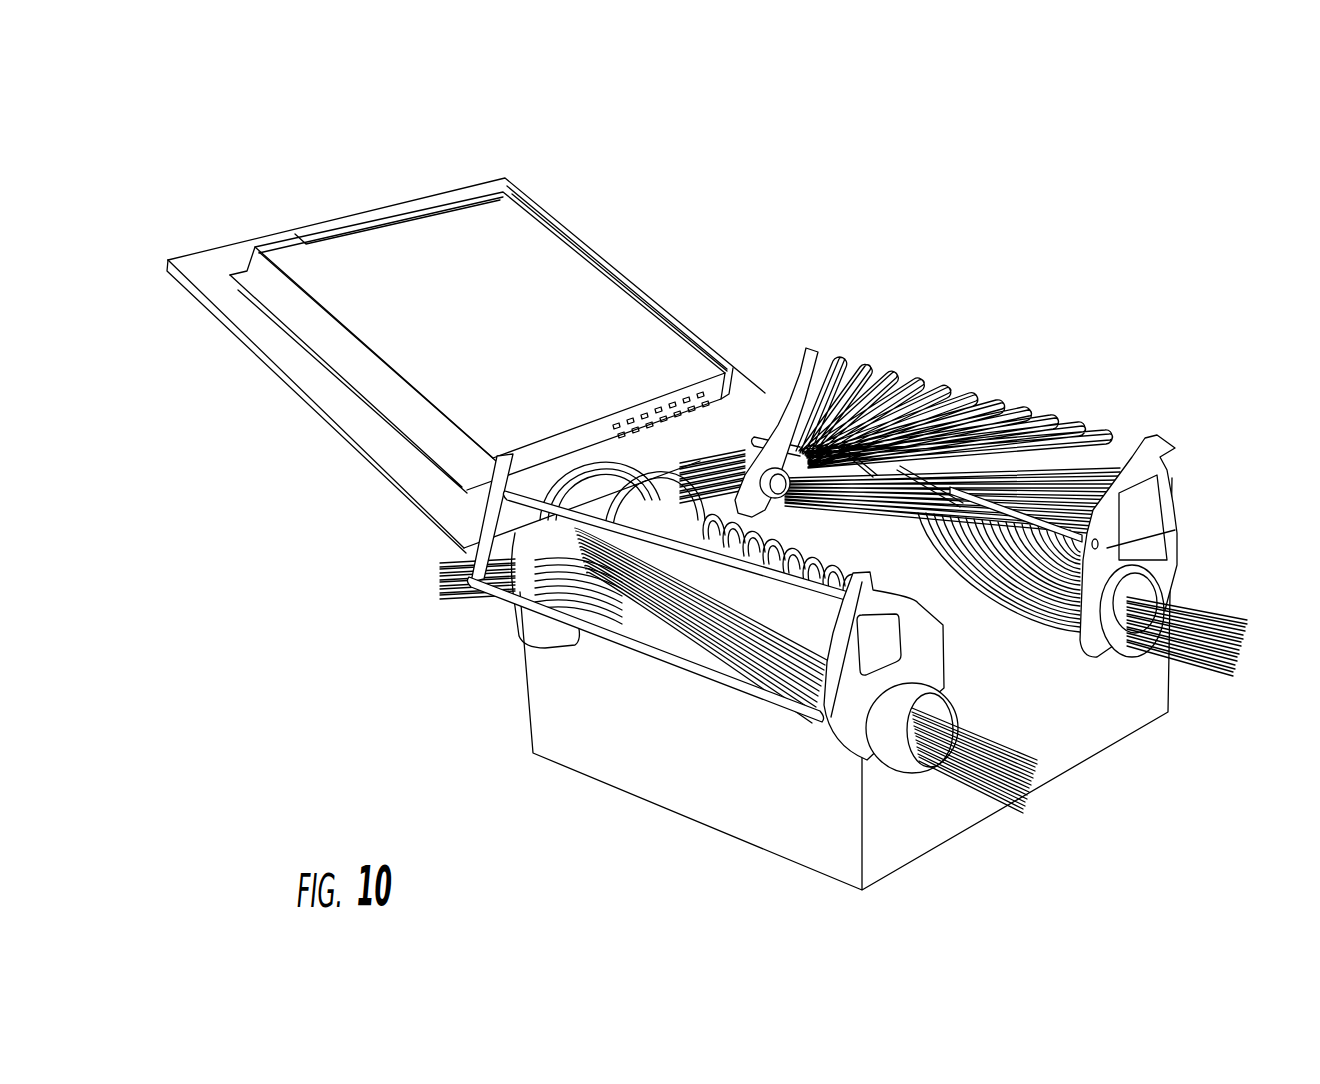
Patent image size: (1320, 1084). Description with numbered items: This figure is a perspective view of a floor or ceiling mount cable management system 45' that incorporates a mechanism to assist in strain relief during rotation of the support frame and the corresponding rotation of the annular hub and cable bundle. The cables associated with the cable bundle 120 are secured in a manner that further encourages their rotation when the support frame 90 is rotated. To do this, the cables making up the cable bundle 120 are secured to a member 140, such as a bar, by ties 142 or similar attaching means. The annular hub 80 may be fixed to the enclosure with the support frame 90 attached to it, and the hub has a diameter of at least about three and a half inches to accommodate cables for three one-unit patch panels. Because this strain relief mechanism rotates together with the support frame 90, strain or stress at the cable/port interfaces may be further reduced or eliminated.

The cable management system 45' is at (466, 317).
The cable bundle 120 is at (710, 463).
The ties 142 is at (906, 398).
The member 140 is at (1052, 532).
The support frame 90 is at (1177, 533).
The annular hub 80 is at (1107, 593).